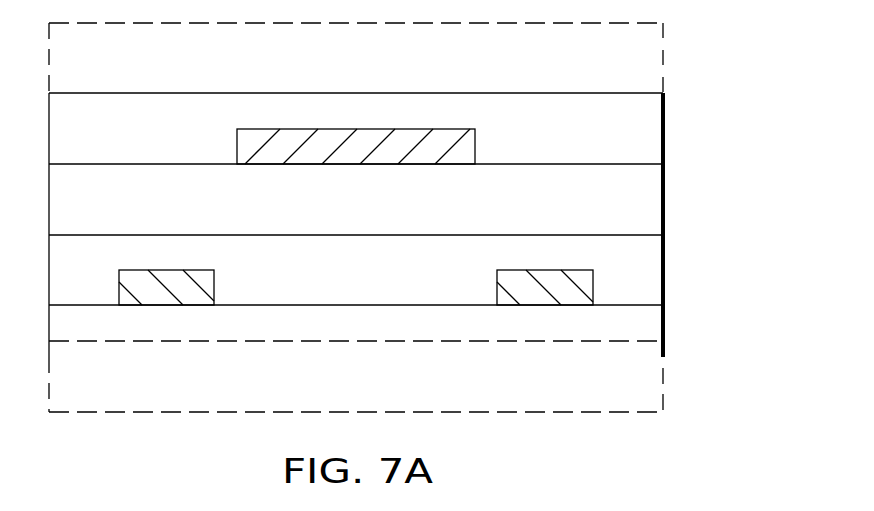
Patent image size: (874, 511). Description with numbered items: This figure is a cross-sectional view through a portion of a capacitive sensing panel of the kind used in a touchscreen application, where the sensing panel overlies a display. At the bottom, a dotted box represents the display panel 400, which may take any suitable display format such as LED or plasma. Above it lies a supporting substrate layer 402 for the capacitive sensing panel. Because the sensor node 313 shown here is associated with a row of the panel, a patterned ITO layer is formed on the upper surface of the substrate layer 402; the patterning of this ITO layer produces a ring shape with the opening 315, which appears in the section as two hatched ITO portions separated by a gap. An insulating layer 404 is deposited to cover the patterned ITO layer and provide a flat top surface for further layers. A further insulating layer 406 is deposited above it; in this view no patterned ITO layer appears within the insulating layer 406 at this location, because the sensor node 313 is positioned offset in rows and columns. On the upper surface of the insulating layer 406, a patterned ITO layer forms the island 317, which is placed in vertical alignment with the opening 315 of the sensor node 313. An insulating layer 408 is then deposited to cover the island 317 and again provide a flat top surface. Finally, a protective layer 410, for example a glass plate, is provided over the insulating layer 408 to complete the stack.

The display panel 400 is at (652, 378).
The supporting substrate layer 402 is at (652, 330).
The insulating layer 404 is at (652, 272).
The insulating layer 406 is at (652, 200).
The insulating layer 408 is at (652, 130).
The protective layer 410 is at (655, 62).
The sensor node 313 is at (103, 278).
The opening 315 is at (216, 286).
The island 317 is at (485, 146).